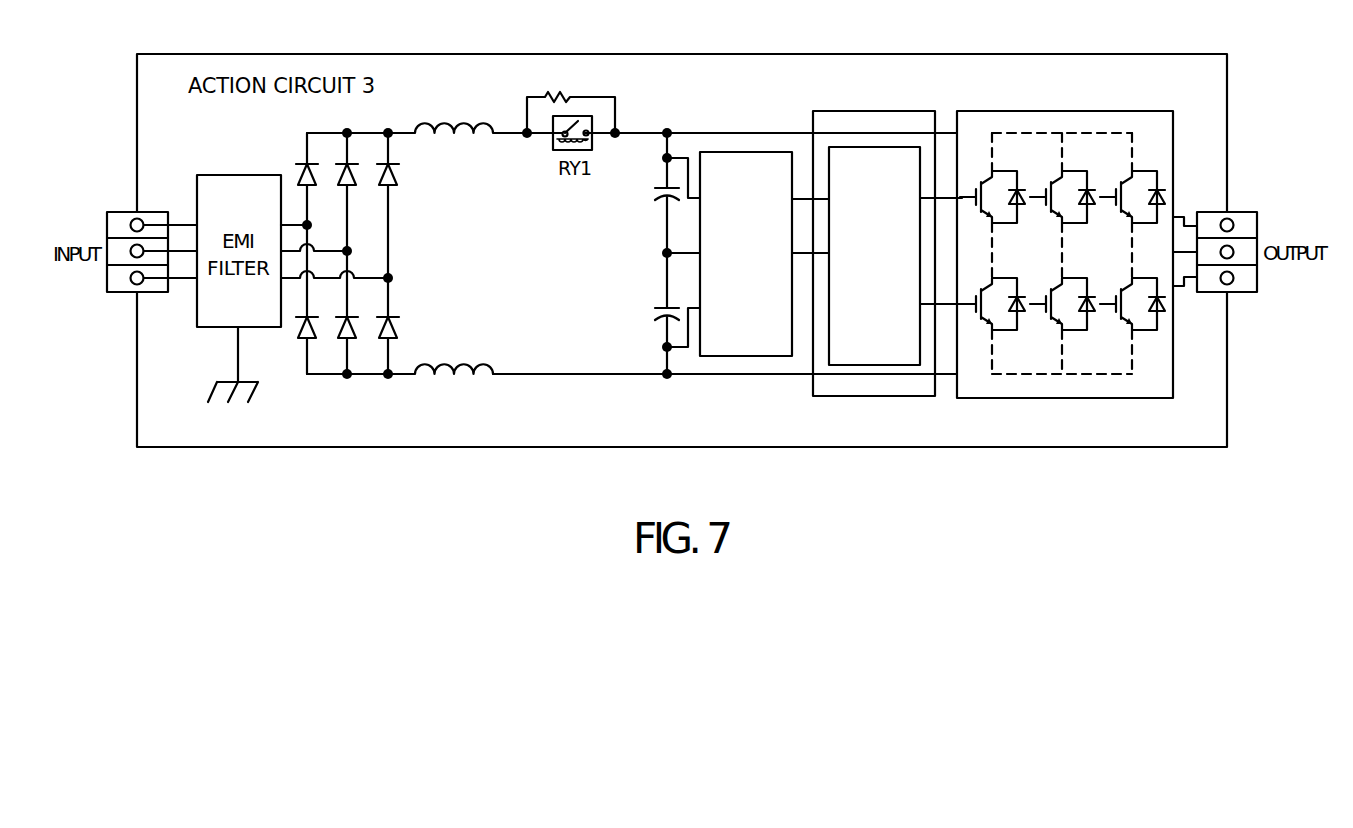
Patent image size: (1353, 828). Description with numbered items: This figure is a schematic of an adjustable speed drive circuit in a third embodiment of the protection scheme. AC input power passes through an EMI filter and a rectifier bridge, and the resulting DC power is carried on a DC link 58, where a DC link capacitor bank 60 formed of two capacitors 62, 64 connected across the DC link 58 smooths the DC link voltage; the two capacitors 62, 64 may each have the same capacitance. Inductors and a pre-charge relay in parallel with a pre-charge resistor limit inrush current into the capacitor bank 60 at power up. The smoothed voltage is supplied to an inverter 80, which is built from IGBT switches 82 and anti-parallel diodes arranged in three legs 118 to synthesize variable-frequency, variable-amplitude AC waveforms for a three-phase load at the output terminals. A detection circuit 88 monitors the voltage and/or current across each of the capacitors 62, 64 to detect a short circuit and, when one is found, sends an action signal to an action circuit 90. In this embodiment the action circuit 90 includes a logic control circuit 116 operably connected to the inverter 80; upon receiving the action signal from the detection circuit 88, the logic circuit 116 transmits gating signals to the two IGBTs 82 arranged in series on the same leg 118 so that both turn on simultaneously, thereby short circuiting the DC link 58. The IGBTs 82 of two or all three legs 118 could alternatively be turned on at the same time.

The DC link 58 is at (543, 375).
The DC link capacitor bank 60 is at (634, 269).
The capacitor 62 is at (655, 194).
The capacitor 64 is at (652, 315).
The inverter 80 is at (1072, 225).
The IGBT switches 82 is at (1085, 160).
The detection circuit 88 is at (751, 145).
The action circuit 90 is at (877, 101).
The logic control circuit 116 is at (873, 367).
The inverter leg 118 is at (1144, 255).